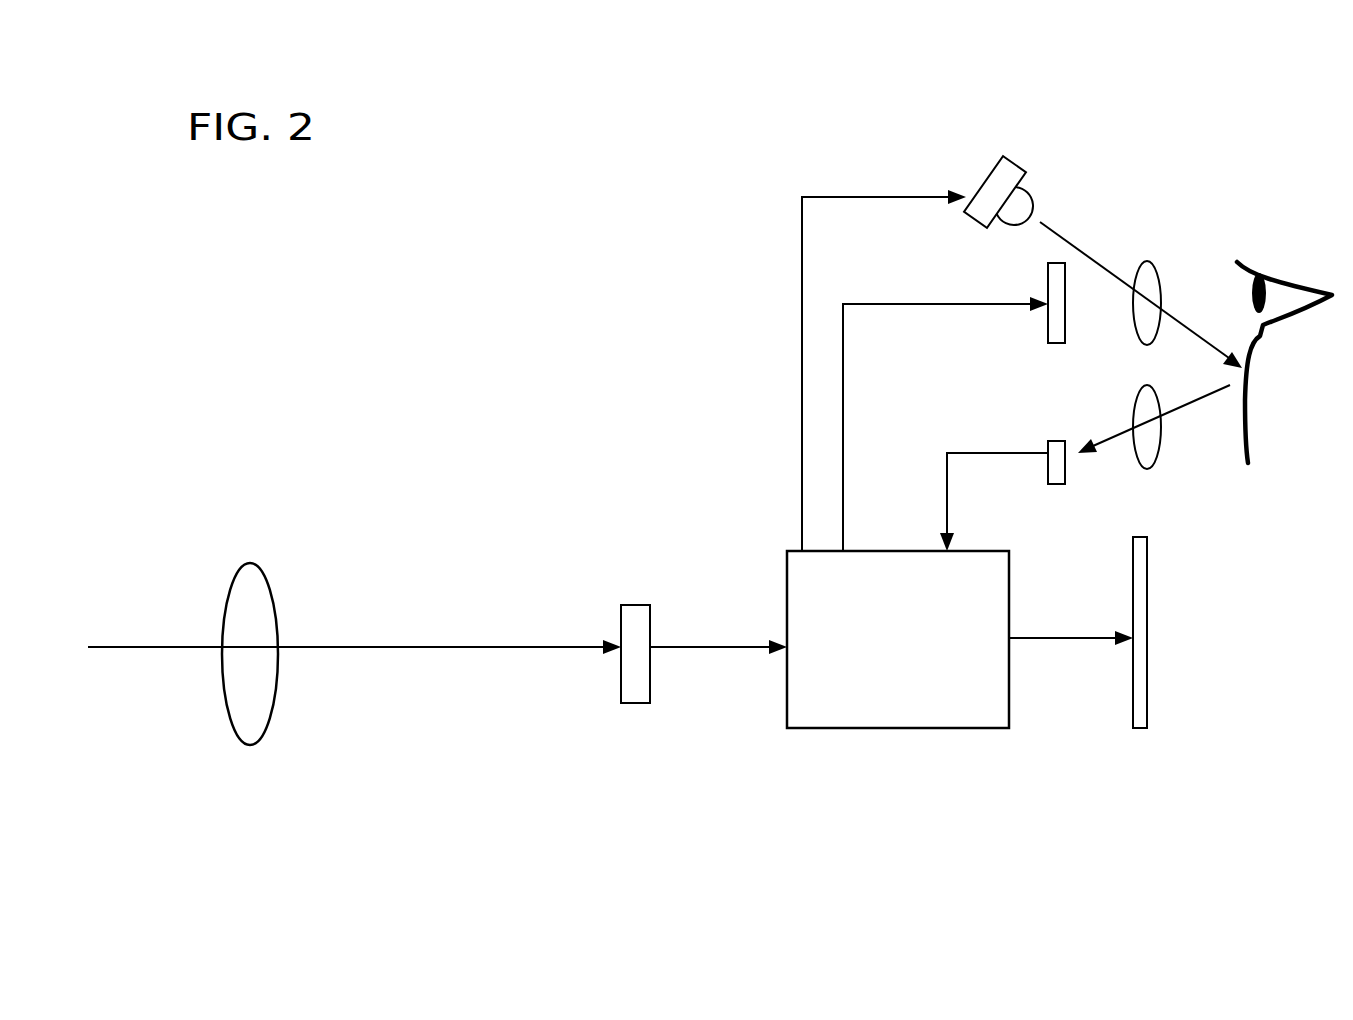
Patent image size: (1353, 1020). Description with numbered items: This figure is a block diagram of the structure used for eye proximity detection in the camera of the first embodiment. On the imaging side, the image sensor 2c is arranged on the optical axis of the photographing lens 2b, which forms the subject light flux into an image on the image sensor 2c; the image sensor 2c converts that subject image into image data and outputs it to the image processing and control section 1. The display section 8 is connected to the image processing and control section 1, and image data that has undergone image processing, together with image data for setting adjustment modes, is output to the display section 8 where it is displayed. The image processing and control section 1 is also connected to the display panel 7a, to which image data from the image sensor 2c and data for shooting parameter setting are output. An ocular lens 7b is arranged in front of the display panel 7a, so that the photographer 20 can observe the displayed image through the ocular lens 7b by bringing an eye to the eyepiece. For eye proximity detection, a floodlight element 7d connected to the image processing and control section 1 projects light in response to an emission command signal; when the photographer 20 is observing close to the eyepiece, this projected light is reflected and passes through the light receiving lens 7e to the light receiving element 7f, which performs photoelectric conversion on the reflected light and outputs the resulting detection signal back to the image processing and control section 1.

The image processing and control section 1 is at (873, 550).
The photographing lens 2b is at (262, 570).
The image sensor 2c is at (640, 605).
The display panel 7a is at (1048, 330).
The ocular lens 7b is at (1153, 265).
The floodlight element 7d is at (1020, 162).
The light receiving lens 7e is at (1137, 458).
The light receiving element 7f is at (1047, 473).
The display section 8 is at (1148, 578).
The photographer 20 is at (1293, 277).